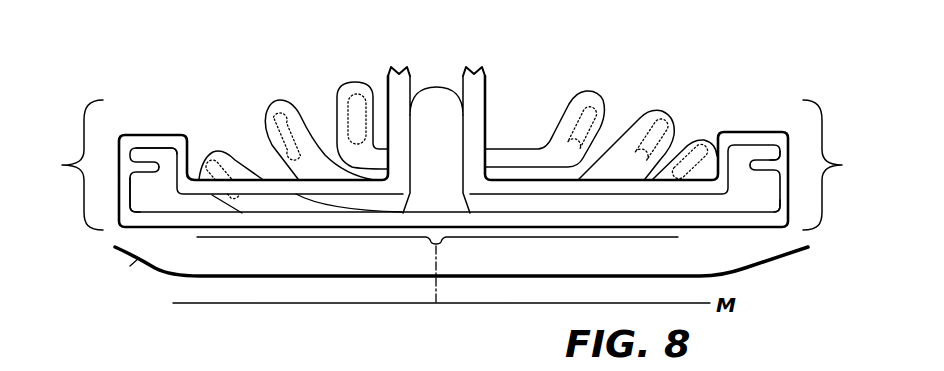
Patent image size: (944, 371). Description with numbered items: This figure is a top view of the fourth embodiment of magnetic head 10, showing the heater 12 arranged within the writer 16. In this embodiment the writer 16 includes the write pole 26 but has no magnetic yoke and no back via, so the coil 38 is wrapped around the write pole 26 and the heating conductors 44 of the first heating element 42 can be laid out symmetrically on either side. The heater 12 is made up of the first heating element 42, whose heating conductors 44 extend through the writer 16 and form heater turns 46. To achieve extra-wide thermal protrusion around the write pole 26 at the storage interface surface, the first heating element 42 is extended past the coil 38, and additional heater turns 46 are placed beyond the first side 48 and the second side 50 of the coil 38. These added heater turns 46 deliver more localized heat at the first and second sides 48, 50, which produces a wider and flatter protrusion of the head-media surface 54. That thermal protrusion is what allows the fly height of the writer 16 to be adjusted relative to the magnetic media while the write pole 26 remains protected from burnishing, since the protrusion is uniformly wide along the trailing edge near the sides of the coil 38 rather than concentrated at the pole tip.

The magnetic head 10 is at (712, 60).
The heater 12 is at (472, 97).
The writer 16 is at (742, 98).
The write pole 26 is at (432, 172).
The coil 38 is at (606, 100).
The first heating element 42 is at (348, 226).
The heating conductors 44 is at (119, 195).
The heater turns 46 is at (119, 147).
The first side of coil 48 is at (62, 165).
The second side of coil 50 is at (842, 165).
The head-media surface 54 is at (208, 276).